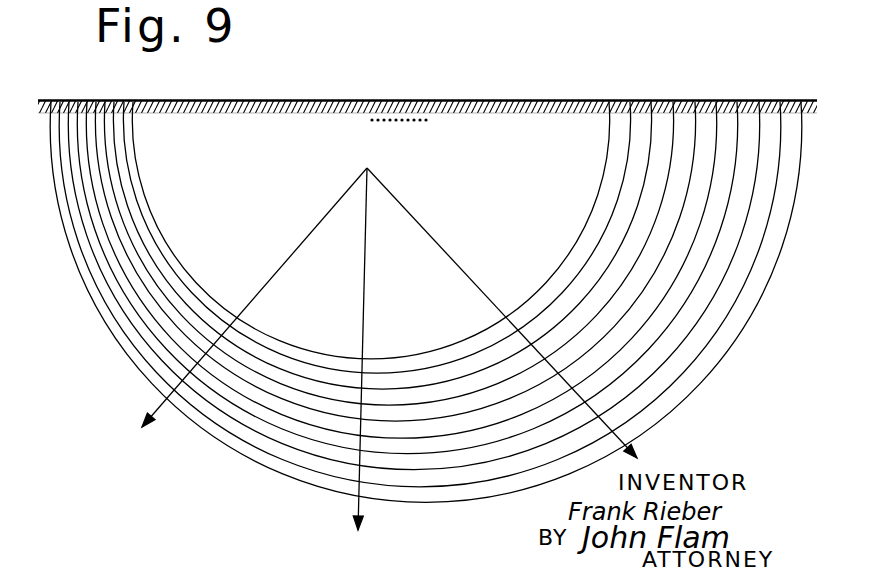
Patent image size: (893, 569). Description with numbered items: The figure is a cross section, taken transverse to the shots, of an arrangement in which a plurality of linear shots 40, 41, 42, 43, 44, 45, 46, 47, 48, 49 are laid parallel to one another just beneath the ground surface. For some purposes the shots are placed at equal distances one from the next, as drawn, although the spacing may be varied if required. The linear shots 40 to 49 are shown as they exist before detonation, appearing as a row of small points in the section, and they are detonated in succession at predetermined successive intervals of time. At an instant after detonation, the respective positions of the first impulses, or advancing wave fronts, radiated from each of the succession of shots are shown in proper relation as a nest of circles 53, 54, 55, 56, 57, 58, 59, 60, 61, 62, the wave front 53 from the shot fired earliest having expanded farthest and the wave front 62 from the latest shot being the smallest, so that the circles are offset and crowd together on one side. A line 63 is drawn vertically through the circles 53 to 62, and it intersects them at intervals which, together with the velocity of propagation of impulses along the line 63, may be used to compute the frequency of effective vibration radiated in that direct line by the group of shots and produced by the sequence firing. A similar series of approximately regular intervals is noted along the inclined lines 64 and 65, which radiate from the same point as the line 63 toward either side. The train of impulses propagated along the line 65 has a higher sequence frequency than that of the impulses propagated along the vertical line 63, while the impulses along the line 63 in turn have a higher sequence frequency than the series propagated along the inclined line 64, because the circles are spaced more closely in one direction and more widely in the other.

The linear shot 40 is at (372, 120).
The linear shot 41 is at (378, 118).
The linear shot 42 is at (386, 118).
The linear shot 43 is at (388, 122).
The linear shot 44 is at (394, 122).
The linear shot 45 is at (400, 123).
The linear shot 46 is at (406, 122).
The linear shot 47 is at (412, 123).
The linear shot 48 is at (420, 123).
The linear shot 49 is at (426, 118).
The advancing wave front 53 is at (606, 112).
The advancing wave front 54 is at (628, 124).
The advancing wave front 55 is at (655, 104).
The advancing wave front 56 is at (671, 100).
The advancing wave front 57 is at (696, 106).
The advancing wave front 58 is at (715, 100).
The advancing wave front 59 is at (738, 100).
The advancing wave front 60 is at (758, 100).
The advancing wave front 61 is at (781, 90).
The advancing wave front 62 is at (801, 100).
The vertical line 63 is at (364, 299).
The inclined line 64 is at (448, 256).
The inclined line 65 is at (285, 265).